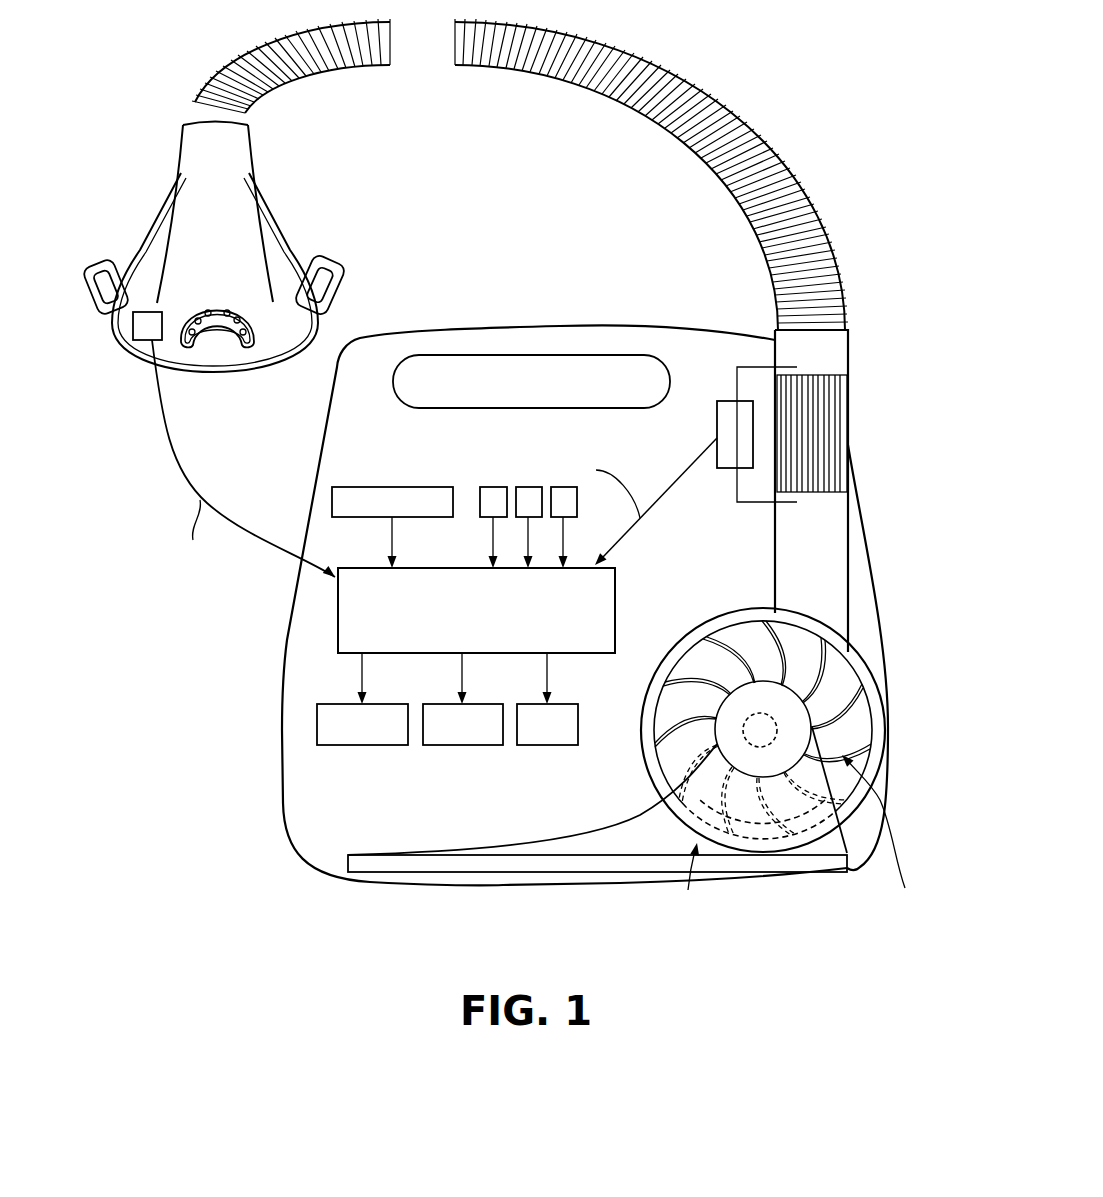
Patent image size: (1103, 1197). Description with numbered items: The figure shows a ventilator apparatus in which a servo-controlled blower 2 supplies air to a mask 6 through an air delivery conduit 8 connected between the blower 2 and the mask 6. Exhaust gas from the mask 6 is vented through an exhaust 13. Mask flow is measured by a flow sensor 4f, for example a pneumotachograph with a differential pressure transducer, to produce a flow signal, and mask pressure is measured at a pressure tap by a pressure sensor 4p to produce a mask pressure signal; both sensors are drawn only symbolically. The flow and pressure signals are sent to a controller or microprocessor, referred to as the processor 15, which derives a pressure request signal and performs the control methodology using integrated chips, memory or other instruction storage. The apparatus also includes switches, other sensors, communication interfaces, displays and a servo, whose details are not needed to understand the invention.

The servo-controlled blower 2 is at (722, 593).
The flow sensor 4f is at (692, 421).
The pressure sensor 4p is at (142, 341).
The mask 6 is at (277, 267).
The air delivery conduit 8 is at (481, 58).
The exhaust 13 is at (257, 343).
The processor 15 is at (365, 602).